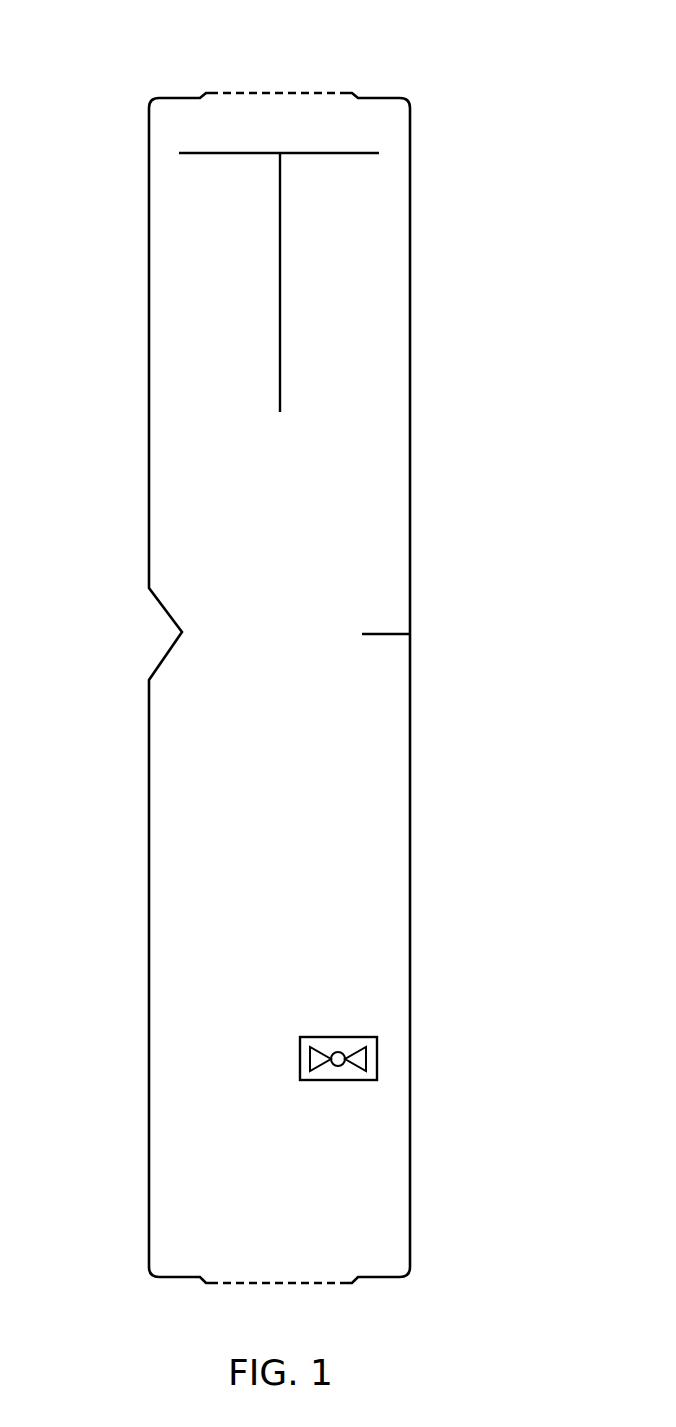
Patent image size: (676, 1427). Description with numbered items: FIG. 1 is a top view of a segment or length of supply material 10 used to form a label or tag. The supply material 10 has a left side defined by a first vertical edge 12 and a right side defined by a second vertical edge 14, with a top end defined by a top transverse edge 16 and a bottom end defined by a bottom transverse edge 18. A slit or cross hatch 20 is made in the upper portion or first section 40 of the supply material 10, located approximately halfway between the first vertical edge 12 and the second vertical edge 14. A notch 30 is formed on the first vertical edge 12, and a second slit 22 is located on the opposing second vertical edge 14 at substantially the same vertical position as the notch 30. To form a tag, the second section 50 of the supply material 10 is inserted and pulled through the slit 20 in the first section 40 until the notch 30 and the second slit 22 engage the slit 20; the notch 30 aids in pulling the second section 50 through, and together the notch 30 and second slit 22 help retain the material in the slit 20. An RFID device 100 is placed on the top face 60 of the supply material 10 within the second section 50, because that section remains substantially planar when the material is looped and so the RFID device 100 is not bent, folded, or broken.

The supply material 10 is at (521, 88).
The first vertical edge 12 is at (148, 412).
The second vertical edge 14 is at (410, 460).
The top transverse edge 16 is at (181, 96).
The bottom transverse edge 18 is at (380, 1280).
The slit 20 is at (313, 317).
The second slit 22 is at (372, 632).
The notch 30 is at (135, 622).
The first section 40 is at (130, 476).
The second section 50 is at (130, 792).
The top face 60 is at (400, 357).
The RFID device 100 is at (338, 1035).